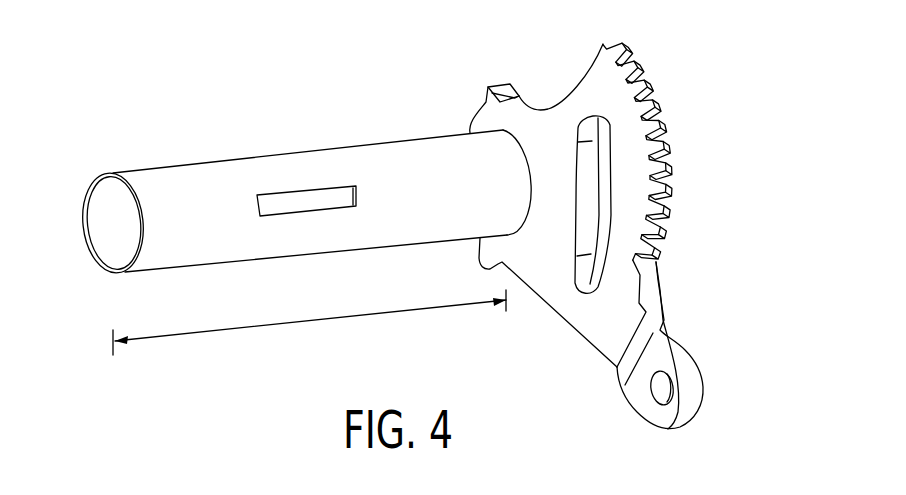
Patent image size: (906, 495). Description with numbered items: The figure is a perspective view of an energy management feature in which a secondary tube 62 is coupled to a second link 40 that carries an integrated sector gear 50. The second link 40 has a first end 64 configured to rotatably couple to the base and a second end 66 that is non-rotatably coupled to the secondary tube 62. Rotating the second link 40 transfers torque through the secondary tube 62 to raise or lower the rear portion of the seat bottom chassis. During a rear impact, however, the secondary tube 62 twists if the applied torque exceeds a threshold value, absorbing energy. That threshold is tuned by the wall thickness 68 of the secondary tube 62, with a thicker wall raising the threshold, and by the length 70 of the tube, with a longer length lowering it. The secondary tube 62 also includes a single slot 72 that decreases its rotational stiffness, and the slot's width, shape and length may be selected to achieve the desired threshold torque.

The second link 40 is at (573, 100).
The sector gear 50 is at (662, 193).
The secondary tube 62 is at (202, 163).
The first end 64 is at (710, 424).
The second end 66 is at (470, 93).
The wall thickness 68 is at (112, 222).
The length 70 is at (308, 322).
The slot 72 is at (316, 193).